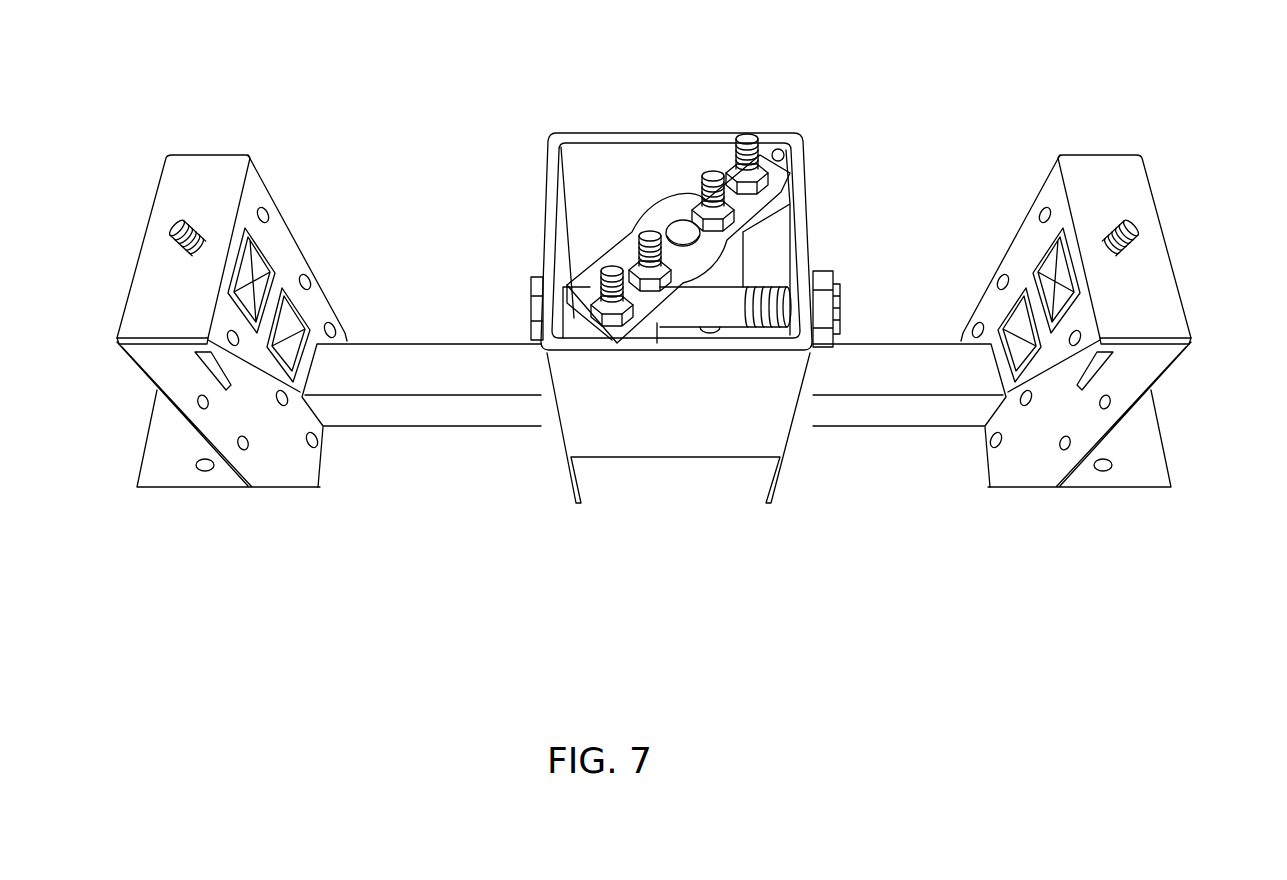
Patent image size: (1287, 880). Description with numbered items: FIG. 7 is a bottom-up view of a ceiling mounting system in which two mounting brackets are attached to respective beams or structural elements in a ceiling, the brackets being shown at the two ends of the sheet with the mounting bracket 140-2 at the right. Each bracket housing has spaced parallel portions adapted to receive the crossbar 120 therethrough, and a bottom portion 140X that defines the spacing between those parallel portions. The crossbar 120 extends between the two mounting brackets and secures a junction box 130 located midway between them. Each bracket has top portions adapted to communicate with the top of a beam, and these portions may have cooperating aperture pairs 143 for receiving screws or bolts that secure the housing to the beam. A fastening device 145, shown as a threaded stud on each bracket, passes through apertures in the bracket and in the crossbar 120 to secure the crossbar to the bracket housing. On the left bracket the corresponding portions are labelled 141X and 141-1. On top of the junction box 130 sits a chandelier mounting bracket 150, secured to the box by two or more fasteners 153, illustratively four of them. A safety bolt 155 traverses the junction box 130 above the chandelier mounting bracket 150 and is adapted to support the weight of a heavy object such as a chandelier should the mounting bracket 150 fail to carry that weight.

The crossbar 120 is at (878, 366).
The junction box 130 is at (805, 213).
The mounting bracket 140-2 is at (1113, 172).
The bottom portion 140X is at (1168, 327).
The first bracket flange 141-1 is at (258, 187).
The first bracket 141X is at (205, 170).
The cooperating aperture pairs 143 is at (632, 246).
The fastening device 145 is at (166, 223).
The chandelier mounting bracket 150 is at (663, 220).
The fasteners 153 is at (735, 140).
The safety bolt 155 is at (855, 290).